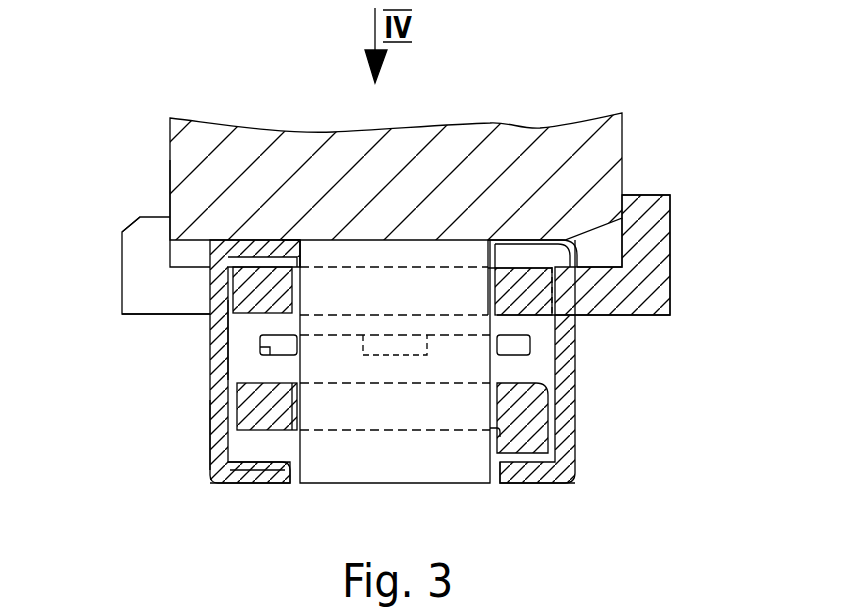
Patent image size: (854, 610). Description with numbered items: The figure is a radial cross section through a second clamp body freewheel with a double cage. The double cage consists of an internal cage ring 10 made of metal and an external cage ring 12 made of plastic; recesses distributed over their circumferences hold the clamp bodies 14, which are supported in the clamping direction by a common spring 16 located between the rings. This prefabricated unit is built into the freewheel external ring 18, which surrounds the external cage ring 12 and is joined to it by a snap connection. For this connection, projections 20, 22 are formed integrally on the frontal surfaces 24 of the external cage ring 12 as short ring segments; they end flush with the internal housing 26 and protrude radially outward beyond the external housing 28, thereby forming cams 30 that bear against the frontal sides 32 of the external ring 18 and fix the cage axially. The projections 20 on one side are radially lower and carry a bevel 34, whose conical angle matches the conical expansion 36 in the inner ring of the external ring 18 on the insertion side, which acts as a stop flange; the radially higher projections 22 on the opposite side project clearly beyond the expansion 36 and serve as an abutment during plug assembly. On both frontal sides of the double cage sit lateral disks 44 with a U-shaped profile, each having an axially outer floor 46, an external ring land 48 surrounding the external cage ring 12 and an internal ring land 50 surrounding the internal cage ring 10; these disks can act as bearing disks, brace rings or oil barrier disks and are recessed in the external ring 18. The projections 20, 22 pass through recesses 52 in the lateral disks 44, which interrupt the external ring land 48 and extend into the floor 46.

The internal cage ring 10 is at (325, 424).
The external cage ring 12 is at (165, 340).
The clamp body 14 is at (413, 405).
The spring 16 is at (316, 379).
The freewheel external ring 18 is at (396, 139).
The projection 20 is at (131, 300).
The projection 22 is at (652, 257).
The frontal surface 24 is at (176, 361).
The internal housing 26 is at (581, 361).
The external housing 28 is at (248, 152).
The cam 30 is at (399, 255).
The frontal side 32 is at (150, 193).
The bevel 34 is at (96, 204).
The conical expansion 36 is at (596, 153).
The lateral disk 44 is at (393, 507).
The floor 46 is at (162, 450).
The external ring land 48 is at (262, 175).
The internal ring land 50 is at (257, 523).
The recess 52 is at (532, 177).